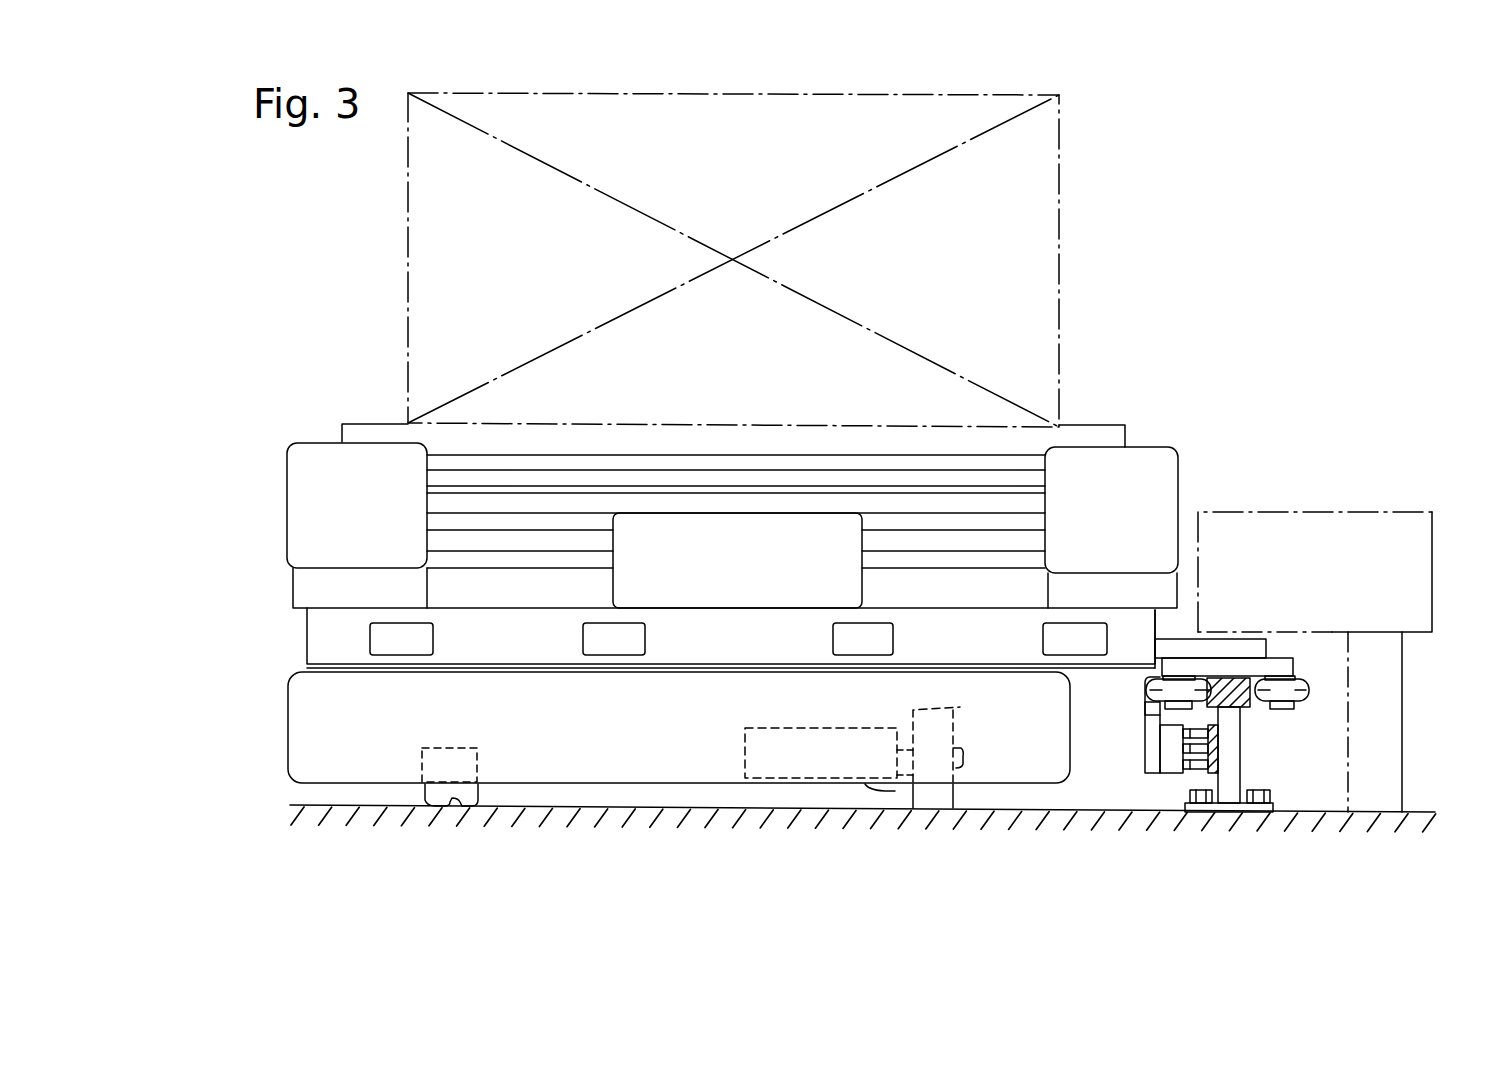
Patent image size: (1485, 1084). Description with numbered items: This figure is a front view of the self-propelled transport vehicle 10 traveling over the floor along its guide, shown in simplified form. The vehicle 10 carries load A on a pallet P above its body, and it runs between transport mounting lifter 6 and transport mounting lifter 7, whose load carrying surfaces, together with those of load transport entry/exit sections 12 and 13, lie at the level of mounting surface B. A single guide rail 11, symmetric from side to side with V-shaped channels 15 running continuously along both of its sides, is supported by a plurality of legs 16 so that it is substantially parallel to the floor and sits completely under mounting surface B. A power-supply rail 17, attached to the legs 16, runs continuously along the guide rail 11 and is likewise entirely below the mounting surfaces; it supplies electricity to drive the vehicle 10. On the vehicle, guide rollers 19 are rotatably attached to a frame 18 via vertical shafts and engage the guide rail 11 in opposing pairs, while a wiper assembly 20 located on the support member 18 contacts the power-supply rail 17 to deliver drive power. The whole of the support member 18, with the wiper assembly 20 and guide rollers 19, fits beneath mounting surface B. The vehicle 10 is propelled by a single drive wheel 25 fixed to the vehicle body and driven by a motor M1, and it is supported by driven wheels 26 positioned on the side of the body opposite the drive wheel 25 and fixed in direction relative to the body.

The load A is at (1060, 232).
The pallet P is at (1095, 423).
The self-propelled transport vehicle 10 is at (317, 436).
The driven wheels 26 is at (420, 756).
The motor M1 is at (823, 726).
The drive wheel 25 is at (960, 707).
The transport mounting lifter 6 is at (1315, 599).
The transport mounting lifter 7 is at (1315, 662).
The load transport entry/exit section 12 is at (1315, 662).
The load transport entry/exit section 13 is at (1326, 522).
The mounting surface B is at (1217, 506).
The frame 18 is at (1249, 642).
The V-shaped channels 15 is at (1188, 680).
The guide rail 11 is at (1228, 678).
The guide rollers 19 is at (1150, 692).
The wiper assembly 20 is at (1167, 772).
The power-supply rail 17 is at (1222, 747).
The legs 16 is at (1240, 780).